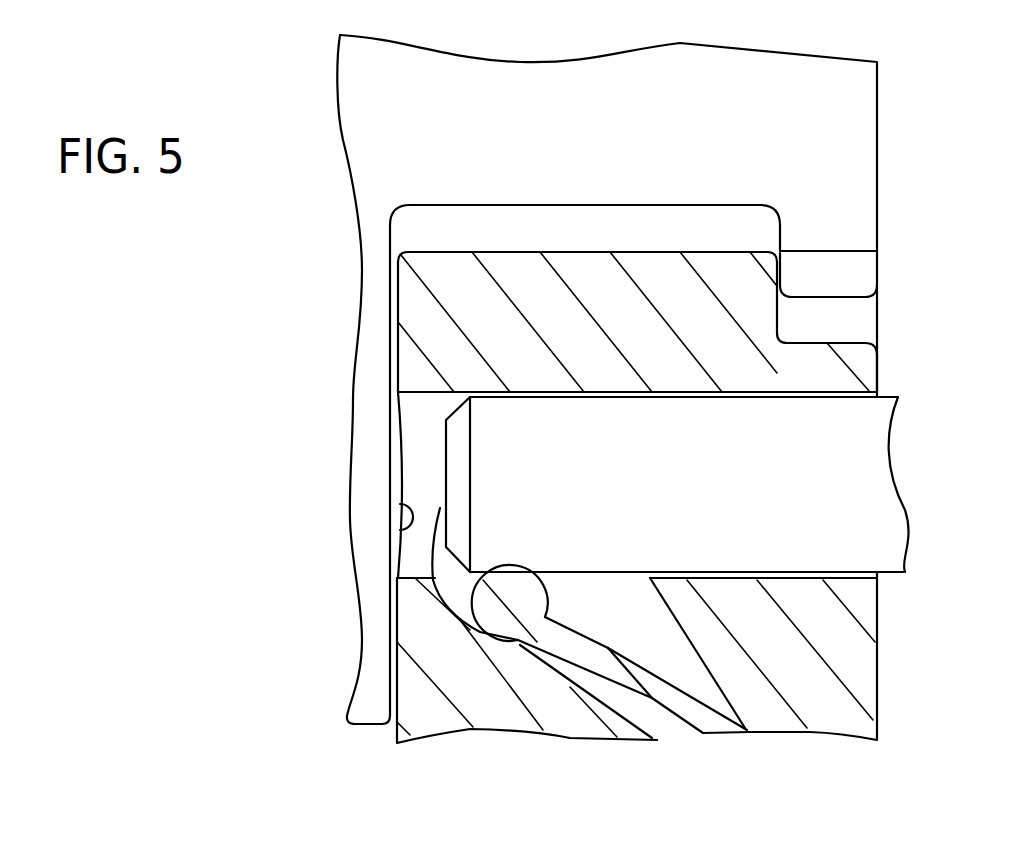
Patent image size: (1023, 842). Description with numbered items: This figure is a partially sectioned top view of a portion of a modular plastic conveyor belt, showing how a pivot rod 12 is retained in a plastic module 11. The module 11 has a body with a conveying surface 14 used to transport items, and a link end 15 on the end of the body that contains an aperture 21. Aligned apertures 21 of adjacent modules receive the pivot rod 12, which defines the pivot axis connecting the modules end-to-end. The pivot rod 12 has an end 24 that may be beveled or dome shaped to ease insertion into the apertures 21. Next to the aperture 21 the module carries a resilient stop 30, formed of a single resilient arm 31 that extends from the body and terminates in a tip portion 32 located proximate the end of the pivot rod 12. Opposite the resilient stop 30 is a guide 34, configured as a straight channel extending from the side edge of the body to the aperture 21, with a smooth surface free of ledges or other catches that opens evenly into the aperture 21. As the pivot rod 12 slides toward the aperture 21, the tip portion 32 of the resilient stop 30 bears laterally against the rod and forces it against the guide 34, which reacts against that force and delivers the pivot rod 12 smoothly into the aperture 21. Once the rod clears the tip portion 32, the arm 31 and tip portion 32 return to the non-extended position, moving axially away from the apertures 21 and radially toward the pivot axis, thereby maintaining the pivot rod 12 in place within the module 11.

The plastic module 11 is at (852, 110).
The pivot rod 12 is at (877, 453).
The conveying surface 14 is at (677, 122).
The link end 15 is at (375, 657).
The aperture 21 is at (397, 542).
The second end of pivot rod 24 is at (445, 468).
The resilient stop 30 is at (708, 722).
The resilient arm 31 is at (610, 665).
The tip portion 32 is at (497, 620).
The guide 34 is at (492, 392).